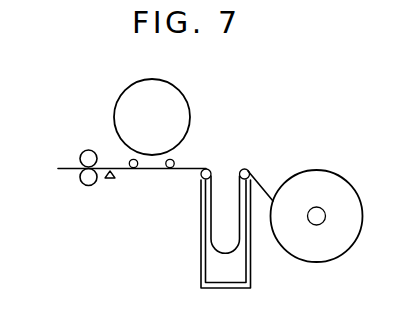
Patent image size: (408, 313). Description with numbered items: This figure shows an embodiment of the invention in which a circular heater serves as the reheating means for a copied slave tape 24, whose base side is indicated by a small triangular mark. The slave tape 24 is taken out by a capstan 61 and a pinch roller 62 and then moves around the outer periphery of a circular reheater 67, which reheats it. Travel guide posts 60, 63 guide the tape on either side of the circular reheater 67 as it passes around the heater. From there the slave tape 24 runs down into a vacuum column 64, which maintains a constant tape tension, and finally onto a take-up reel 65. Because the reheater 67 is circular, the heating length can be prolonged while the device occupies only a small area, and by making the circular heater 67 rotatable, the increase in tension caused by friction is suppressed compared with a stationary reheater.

The slave tape 24 is at (63, 167).
The travel guide post 60 is at (132, 168).
The capstan 61 is at (80, 180).
The pinch roller 62 is at (88, 150).
The travel guide post 63 is at (168, 168).
The vacuum column 64 is at (215, 262).
The take-up reel 65 is at (321, 262).
The circular reheater 67 is at (187, 106).